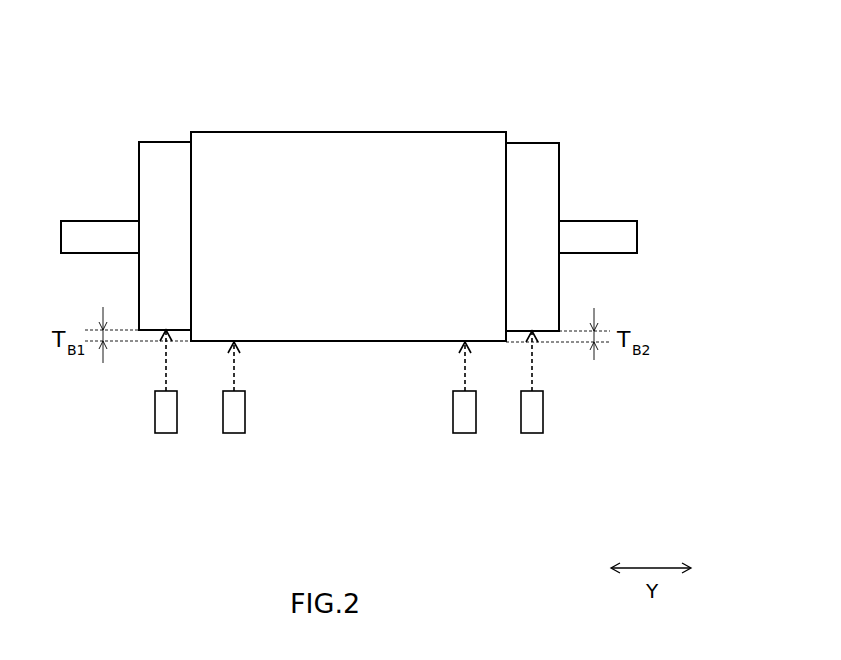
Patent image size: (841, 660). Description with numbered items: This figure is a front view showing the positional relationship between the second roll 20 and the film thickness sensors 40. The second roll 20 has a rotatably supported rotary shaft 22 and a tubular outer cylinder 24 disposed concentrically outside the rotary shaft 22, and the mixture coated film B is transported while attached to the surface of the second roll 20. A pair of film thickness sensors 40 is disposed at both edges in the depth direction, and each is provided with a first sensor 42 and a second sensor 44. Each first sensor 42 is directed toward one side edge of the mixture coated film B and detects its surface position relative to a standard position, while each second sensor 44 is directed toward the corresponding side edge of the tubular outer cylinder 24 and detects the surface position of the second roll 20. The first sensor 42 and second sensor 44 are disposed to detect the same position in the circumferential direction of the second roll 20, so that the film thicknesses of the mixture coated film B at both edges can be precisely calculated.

The second roll 20 is at (349, 188).
The rotary shaft 22 is at (84, 220).
The tubular outer cylinder 24 is at (167, 150).
The mixture coated film B is at (382, 132).
The film thickness sensor 40 is at (293, 503).
The first sensor 42 is at (233, 434).
The second sensor 44 is at (163, 434).